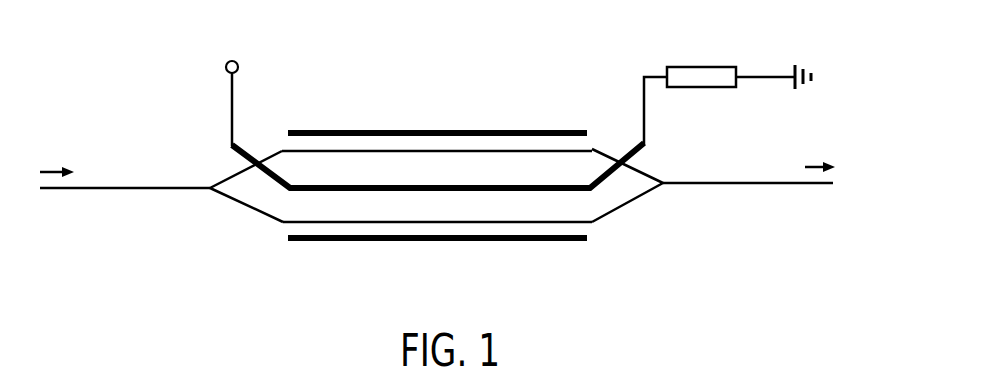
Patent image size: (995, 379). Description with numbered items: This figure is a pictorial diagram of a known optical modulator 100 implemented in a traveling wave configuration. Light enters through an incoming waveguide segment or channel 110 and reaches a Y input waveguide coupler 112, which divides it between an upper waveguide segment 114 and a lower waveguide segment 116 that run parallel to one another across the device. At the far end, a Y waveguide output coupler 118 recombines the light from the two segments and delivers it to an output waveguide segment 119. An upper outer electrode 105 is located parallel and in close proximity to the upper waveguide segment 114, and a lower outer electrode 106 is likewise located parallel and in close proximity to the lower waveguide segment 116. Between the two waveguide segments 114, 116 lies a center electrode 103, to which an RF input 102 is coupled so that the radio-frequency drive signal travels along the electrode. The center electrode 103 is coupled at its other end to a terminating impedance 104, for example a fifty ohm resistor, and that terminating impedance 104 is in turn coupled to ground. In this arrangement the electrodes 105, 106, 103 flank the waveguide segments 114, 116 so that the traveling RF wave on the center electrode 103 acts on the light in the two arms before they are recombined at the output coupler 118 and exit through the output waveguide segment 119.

The modulator 100 is at (462, 56).
The RF input 102 is at (235, 58).
The center electrode 103 is at (583, 190).
The terminating impedance 104 is at (698, 66).
The upper outer electrode 105 is at (352, 130).
The lower outer electrode 106 is at (307, 242).
The incoming waveguide segment 110 is at (125, 188).
The Y input waveguide coupler 112 is at (208, 190).
The upper waveguide segment 114 is at (290, 151).
The lower waveguide segment 116 is at (283, 223).
The Y waveguide output coupler 118 is at (667, 185).
The output waveguide segment 119 is at (762, 184).